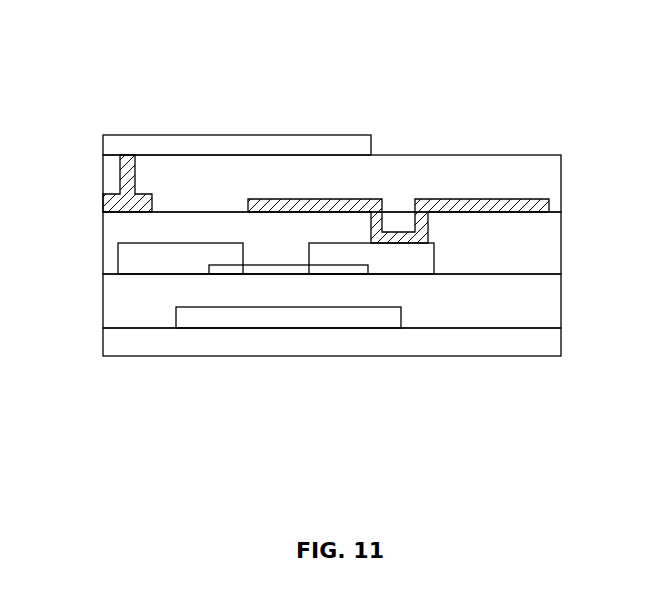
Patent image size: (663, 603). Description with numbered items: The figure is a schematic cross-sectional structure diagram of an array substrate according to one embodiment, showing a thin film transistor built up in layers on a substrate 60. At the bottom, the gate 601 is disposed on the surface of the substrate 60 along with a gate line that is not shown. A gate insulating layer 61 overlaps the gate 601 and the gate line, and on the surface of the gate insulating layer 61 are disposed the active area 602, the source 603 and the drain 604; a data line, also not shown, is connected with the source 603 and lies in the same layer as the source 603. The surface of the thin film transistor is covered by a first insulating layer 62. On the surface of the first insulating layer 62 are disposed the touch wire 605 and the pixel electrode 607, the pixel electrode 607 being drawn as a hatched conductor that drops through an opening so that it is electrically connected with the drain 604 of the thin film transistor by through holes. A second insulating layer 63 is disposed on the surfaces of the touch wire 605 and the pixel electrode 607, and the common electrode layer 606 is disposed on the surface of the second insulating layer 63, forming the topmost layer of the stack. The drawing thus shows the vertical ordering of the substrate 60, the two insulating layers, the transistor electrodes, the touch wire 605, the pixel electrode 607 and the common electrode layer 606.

The substrate 60 is at (377, 356).
The gate insulating layer 61 is at (537, 302).
The first insulating layer 62 is at (537, 256).
The second insulating layer 63 is at (533, 176).
The gate 601 is at (310, 315).
The active area 602 is at (270, 270).
The source 603 is at (155, 255).
The drain 604 is at (405, 261).
The touch wire 605 is at (105, 195).
The common electrode layer 606 is at (222, 135).
The pixel electrode 607 is at (453, 203).